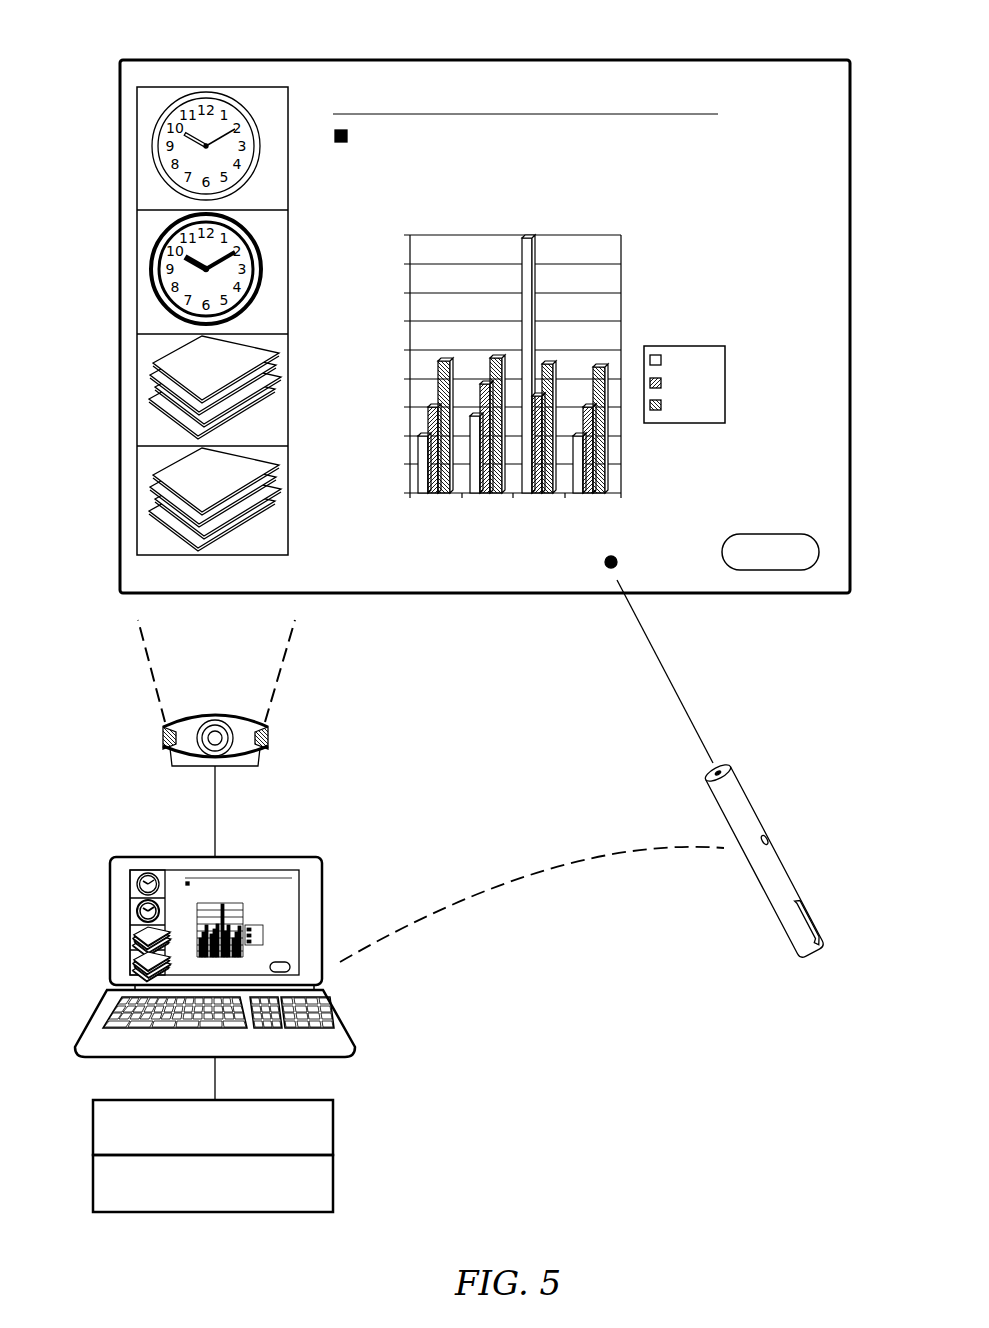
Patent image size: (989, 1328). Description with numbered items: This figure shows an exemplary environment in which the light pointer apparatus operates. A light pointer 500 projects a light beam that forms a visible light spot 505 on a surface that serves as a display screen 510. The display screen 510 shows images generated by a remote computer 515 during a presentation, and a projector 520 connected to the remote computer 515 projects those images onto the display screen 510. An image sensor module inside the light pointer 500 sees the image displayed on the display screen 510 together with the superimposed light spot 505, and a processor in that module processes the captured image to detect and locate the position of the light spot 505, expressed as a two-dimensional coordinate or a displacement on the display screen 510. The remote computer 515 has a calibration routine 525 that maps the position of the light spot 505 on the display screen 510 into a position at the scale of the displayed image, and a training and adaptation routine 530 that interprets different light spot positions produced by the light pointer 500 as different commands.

The light pointer 500 is at (752, 806).
The light spot 505 is at (607, 570).
The display screen 510 is at (188, 60).
The remote computer 515 is at (110, 898).
The projector 520 is at (165, 741).
The calibration routine 525 is at (336, 1126).
The training and adaptation routine 530 is at (336, 1184).